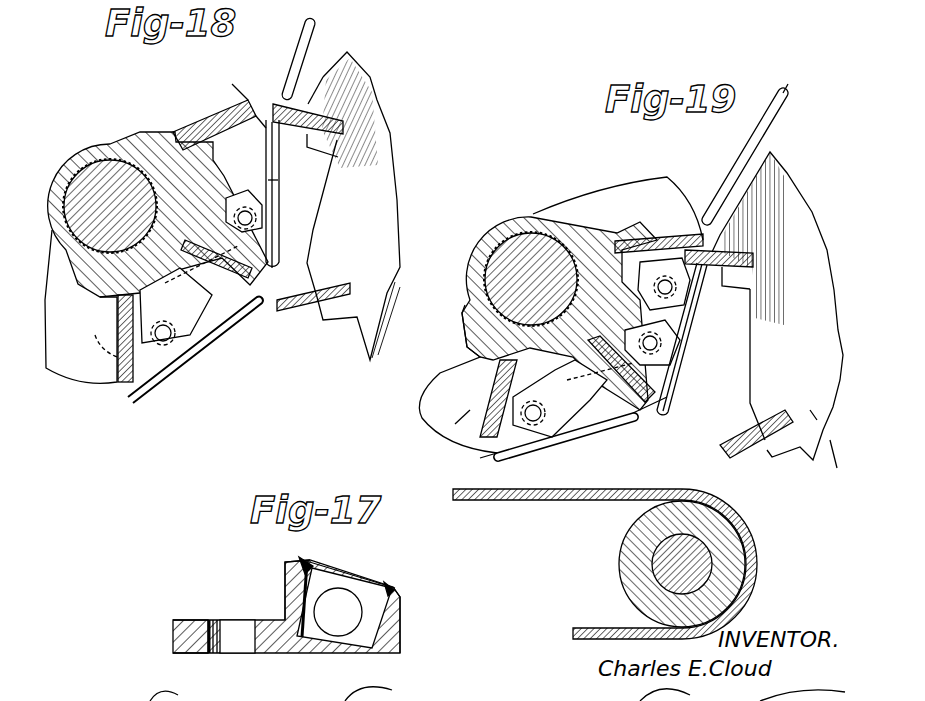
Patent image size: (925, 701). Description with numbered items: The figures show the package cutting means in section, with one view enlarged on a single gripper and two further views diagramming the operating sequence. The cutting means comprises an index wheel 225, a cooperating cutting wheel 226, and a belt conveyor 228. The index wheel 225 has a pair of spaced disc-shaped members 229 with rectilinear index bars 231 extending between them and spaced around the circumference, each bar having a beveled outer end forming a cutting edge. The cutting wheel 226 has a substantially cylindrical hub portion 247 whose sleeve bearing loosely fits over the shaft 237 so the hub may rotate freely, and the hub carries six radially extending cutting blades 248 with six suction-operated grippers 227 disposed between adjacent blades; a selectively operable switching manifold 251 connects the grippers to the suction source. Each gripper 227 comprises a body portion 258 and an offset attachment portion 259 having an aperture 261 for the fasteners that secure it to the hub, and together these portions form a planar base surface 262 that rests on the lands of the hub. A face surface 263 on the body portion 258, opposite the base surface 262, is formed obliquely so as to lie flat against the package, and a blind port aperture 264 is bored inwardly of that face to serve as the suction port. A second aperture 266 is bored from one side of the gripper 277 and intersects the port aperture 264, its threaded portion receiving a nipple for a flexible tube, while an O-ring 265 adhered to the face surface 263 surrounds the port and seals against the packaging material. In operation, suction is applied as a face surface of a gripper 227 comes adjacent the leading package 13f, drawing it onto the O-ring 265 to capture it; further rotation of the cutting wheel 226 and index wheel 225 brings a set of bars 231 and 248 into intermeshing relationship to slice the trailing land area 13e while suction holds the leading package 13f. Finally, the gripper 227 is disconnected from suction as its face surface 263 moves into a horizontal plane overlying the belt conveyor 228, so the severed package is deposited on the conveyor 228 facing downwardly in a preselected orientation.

In FIG. 18, the trailing land area 13e is at (282, 95).
In FIG. 18, the leading package 13f is at (275, 183).
In FIG. 18, the index wheel 225 is at (355, 344).
In FIG. 19, the index wheel 225 is at (748, 167).
In FIG. 18, the cutting wheel 226 is at (93, 313).
In FIG. 19, the cutting wheel 226 is at (462, 288).
In FIG. 18, the suction-operated gripper 227 is at (236, 190).
In FIG. 19, the suction-operated gripper 227 is at (667, 331).
In FIG. 17, the suction-operated gripper 227 is at (414, 634).
In FIG. 19, the belt conveyor 228 is at (592, 506).
In FIG. 18, the disc-shaped member 229 is at (372, 200).
In FIG. 19, the disc-shaped member 229 is at (777, 325).
In FIG. 18, the rectilinear index bar 231 is at (305, 97).
In FIG. 19, the rectilinear index bar 231 is at (737, 252).
In FIG. 18, the shaft 237 is at (97, 183).
In FIG. 19, the shaft 237 is at (535, 262).
In FIG. 18, the hub portion 247 is at (125, 145).
In FIG. 19, the hub portion 247 is at (598, 247).
In FIG. 18, the cutting blade 248 is at (215, 115).
In FIG. 19, the cutting blade 248 is at (672, 235).
In FIG. 18, the switching manifold 251 is at (232, 80).
In FIG. 19, the switching manifold 251 is at (450, 431).
In FIG. 17, the body portion 258 is at (295, 590).
In FIG. 17, the offset attachment portion 259 is at (183, 633).
In FIG. 17, the aperture 261 is at (215, 640).
In FIG. 17, the planar base surface 262 is at (303, 655).
In FIG. 18, the face surface 263 is at (208, 343).
In FIG. 19, the face surface 263 is at (612, 428).
In FIG. 17, the face surface 263 is at (295, 560).
In FIG. 17, the port aperture 264 is at (396, 587).
In FIG. 18, the O-ring 265 is at (273, 207).
In FIG. 19, the O-ring 265 is at (682, 339).
In FIG. 17, the O-ring 265 is at (307, 562).
In FIG. 17, the intersecting aperture 266 is at (350, 594).
In FIG. 18, the gripper 277 is at (389, 6).